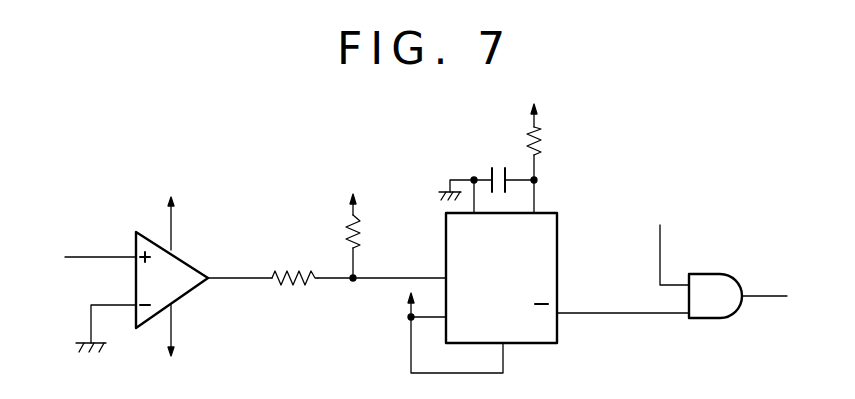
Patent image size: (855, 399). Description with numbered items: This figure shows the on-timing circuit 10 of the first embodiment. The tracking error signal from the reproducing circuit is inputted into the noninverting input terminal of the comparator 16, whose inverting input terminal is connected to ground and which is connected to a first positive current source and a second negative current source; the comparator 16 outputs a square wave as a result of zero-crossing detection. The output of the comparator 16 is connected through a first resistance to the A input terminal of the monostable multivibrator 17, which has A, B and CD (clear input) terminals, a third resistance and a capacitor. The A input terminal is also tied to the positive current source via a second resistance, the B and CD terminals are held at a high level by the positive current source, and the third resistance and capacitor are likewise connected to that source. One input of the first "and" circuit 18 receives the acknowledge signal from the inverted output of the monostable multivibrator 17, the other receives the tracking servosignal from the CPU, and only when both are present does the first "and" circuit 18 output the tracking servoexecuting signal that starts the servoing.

The on-timing circuit 10 is at (272, 146).
The comparator 16 is at (188, 258).
The monostable multivibrator 17 is at (558, 220).
The first "and" circuit 18 is at (717, 274).